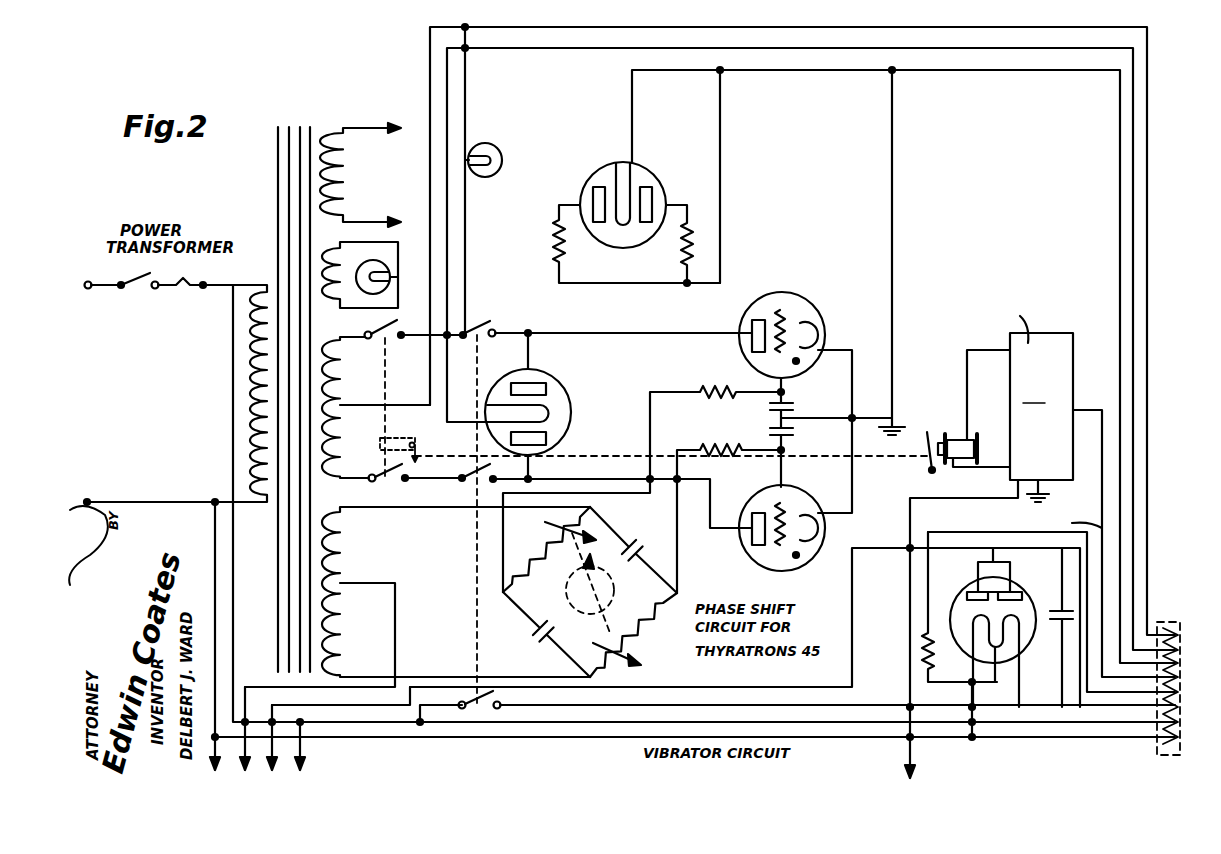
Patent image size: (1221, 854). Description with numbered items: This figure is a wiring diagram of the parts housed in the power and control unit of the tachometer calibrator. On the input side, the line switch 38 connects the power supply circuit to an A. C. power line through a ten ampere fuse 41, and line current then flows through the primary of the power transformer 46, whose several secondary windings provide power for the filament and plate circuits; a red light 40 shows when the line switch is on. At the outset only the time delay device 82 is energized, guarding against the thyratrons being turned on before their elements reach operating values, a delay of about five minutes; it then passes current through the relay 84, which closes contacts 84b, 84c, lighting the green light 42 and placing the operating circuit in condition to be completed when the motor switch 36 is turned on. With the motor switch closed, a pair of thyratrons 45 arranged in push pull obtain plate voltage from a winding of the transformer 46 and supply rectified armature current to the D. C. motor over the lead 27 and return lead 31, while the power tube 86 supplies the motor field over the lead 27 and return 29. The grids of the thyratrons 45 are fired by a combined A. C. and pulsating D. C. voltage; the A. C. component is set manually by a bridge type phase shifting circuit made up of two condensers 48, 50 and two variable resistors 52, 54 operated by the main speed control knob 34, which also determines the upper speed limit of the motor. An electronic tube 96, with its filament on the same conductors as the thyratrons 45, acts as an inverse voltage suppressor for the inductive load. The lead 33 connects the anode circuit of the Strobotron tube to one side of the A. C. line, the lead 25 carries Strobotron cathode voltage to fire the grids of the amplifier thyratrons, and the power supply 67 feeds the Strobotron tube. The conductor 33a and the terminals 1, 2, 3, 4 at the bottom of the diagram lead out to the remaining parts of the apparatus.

The line terminal 1 is at (158, 644).
The line terminal 2 is at (241, 738).
The line terminal 3 is at (268, 747).
The line terminal 4 is at (295, 754).
The lead 25 is at (758, 686).
The lead 27 is at (1150, 39).
The return lead 29 is at (1137, 66).
The return lead 31 is at (1123, 99).
The lead 33 is at (375, 723).
The conductor 33a is at (216, 671).
The main speed control knob 34 is at (618, 608).
The motor switch 36 is at (478, 326).
The line switch 38 is at (133, 279).
The red light 40 is at (373, 261).
The fuse 41 is at (183, 278).
The green light 42 is at (500, 149).
The thyratrons 45 is at (823, 323).
The power transformer 46 is at (302, 122).
The condenser 48 is at (540, 644).
The condenser 50 is at (629, 533).
The variable resistor 52 is at (545, 546).
The variable resistor 54 is at (638, 641).
The power supply 67 is at (1010, 582).
The time delay device 82 is at (1040, 537).
The relay 84 is at (978, 440).
The relay contact 84b is at (380, 481).
The relay contact 84c is at (400, 325).
The power tube 86 is at (570, 400).
The electronic tube 96 is at (663, 181).